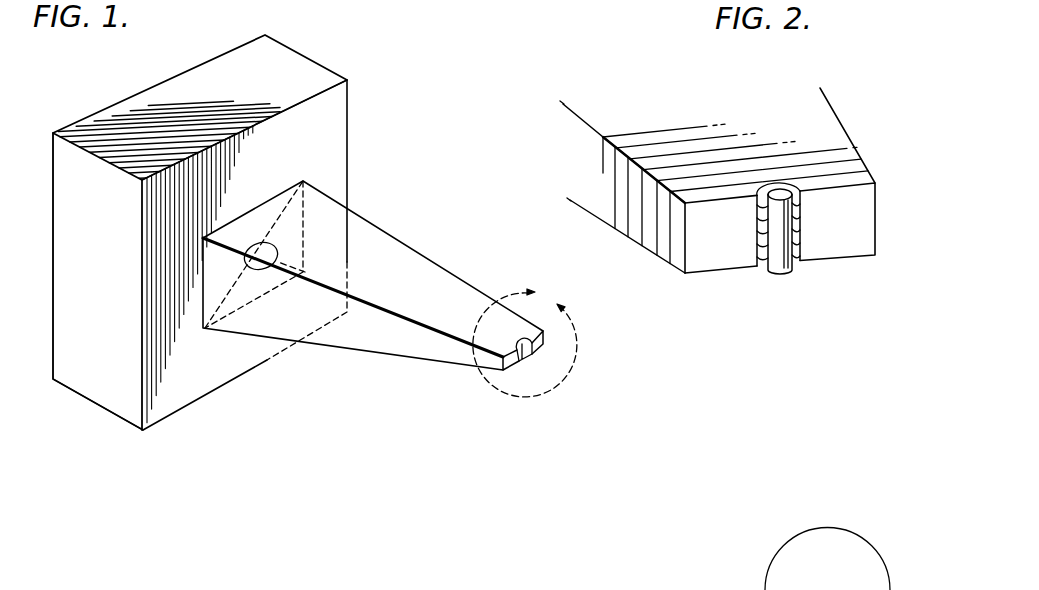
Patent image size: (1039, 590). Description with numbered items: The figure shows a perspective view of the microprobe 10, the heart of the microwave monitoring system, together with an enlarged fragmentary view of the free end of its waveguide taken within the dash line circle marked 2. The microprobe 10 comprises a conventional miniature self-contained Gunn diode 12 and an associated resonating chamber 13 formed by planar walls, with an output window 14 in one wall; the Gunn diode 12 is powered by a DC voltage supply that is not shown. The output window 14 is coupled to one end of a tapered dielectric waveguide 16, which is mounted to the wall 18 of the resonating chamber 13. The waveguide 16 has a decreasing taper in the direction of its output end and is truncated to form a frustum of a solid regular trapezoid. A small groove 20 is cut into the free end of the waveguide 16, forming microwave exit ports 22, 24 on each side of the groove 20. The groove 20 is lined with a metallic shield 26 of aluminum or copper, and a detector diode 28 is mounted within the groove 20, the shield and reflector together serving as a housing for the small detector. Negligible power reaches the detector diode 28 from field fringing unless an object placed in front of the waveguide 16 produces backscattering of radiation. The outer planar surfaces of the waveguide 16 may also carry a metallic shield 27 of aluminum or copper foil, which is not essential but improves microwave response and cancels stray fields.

In FIG. 1, the microprobe 10 is at (284, 366).
In FIG. 1, the Gunn diode 12 is at (312, 62).
In FIG. 1, the resonating chamber 13 is at (82, 235).
In FIG. 1, the output window 14 is at (250, 250).
In FIG. 1, the tapered dielectric waveguide 16 is at (417, 257).
In FIG. 2, the tapered dielectric waveguide 16 is at (828, 128).
In FIG. 1, the wall 18 is at (325, 117).
In FIG. 1, the section indicator for FIG. 2 is at (525, 340).
In FIG. 1, the groove 20 is at (537, 358).
In FIG. 1, the microwave exit port 22 is at (517, 361).
In FIG. 2, the microwave exit port 22 is at (717, 247).
In FIG. 1, the microwave exit port 24 is at (540, 342).
In FIG. 2, the microwave exit port 24 is at (860, 225).
In FIG. 2, the metallic shield 26 is at (800, 228).
In FIG. 2, the metallic shield 27 is at (650, 148).
In FIG. 2, the detector diode 28 is at (778, 265).